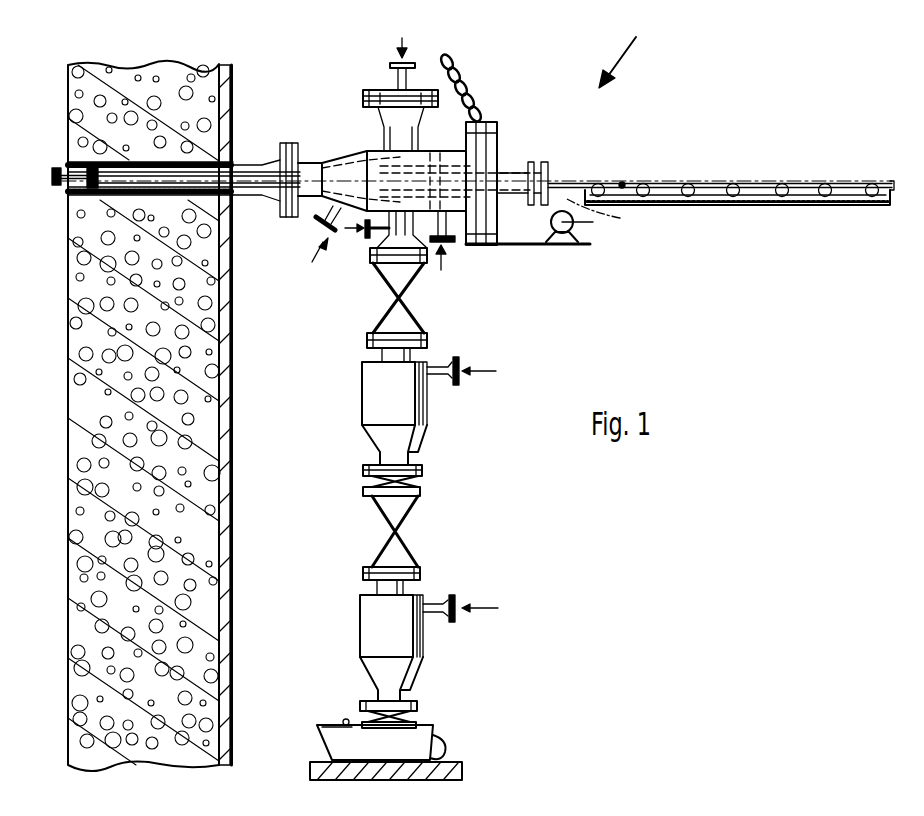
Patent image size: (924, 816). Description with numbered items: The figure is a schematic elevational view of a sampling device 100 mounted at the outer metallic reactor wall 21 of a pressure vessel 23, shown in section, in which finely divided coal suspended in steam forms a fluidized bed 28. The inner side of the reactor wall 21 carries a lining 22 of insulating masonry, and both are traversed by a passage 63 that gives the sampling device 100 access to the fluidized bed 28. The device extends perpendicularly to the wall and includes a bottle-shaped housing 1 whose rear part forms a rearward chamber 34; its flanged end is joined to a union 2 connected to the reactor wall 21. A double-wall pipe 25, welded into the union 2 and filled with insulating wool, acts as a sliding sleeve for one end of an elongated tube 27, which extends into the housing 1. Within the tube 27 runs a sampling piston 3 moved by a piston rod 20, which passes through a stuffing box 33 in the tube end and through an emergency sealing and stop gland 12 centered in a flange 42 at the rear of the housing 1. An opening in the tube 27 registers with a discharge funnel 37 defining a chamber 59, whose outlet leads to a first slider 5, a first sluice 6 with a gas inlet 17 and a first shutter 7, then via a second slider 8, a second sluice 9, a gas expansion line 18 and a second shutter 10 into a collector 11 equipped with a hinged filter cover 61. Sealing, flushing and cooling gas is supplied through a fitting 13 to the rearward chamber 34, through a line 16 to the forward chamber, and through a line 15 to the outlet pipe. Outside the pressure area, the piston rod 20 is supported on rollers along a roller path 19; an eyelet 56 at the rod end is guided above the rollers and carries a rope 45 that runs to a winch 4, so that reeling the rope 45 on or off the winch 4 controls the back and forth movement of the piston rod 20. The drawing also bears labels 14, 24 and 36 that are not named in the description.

The sampling device 100 is at (628, 49).
The housing 1 is at (380, 156).
The union 2 is at (248, 170).
The sampling piston 3 is at (68, 178).
The winch 4 is at (583, 228).
The first slider 5 is at (410, 322).
The first sluice 6 is at (420, 405).
The first shutter 7 is at (422, 471).
The second slider 8 is at (400, 516).
The second sluice 9 is at (415, 630).
The second shutter 10 is at (420, 706).
The collector 11 is at (335, 738).
The emergency sealing and stop gland 12 is at (543, 162).
The fitting 13 is at (455, 240).
The shut-off valve 14 is at (393, 66).
The line 15 is at (372, 254).
The line 16 is at (318, 226).
The gas inlet 17 is at (462, 360).
The gas expansion line 18 is at (453, 596).
The roller path 19 is at (756, 208).
The piston rod 20 is at (162, 170).
The reactor wall 21 is at (225, 492).
The lining 22 is at (190, 525).
The pressure vessel 23 is at (229, 659).
The chain 24 is at (468, 87).
The double-wall pipe 25 is at (168, 197).
The tube 27 is at (107, 197).
The fluidized bed 28 is at (163, 416).
The stuffing box 33 is at (428, 165).
The rearward chamber 34 is at (470, 166).
The pipe end 36 is at (892, 182).
The discharge funnel 37 is at (468, 204).
The flange 42 is at (494, 135).
The rope 45 is at (603, 212).
The eyelet 56 is at (622, 183).
The chamber 59 is at (385, 167).
The hinged filter cover 61 is at (338, 722).
The passage 63 is at (208, 197).